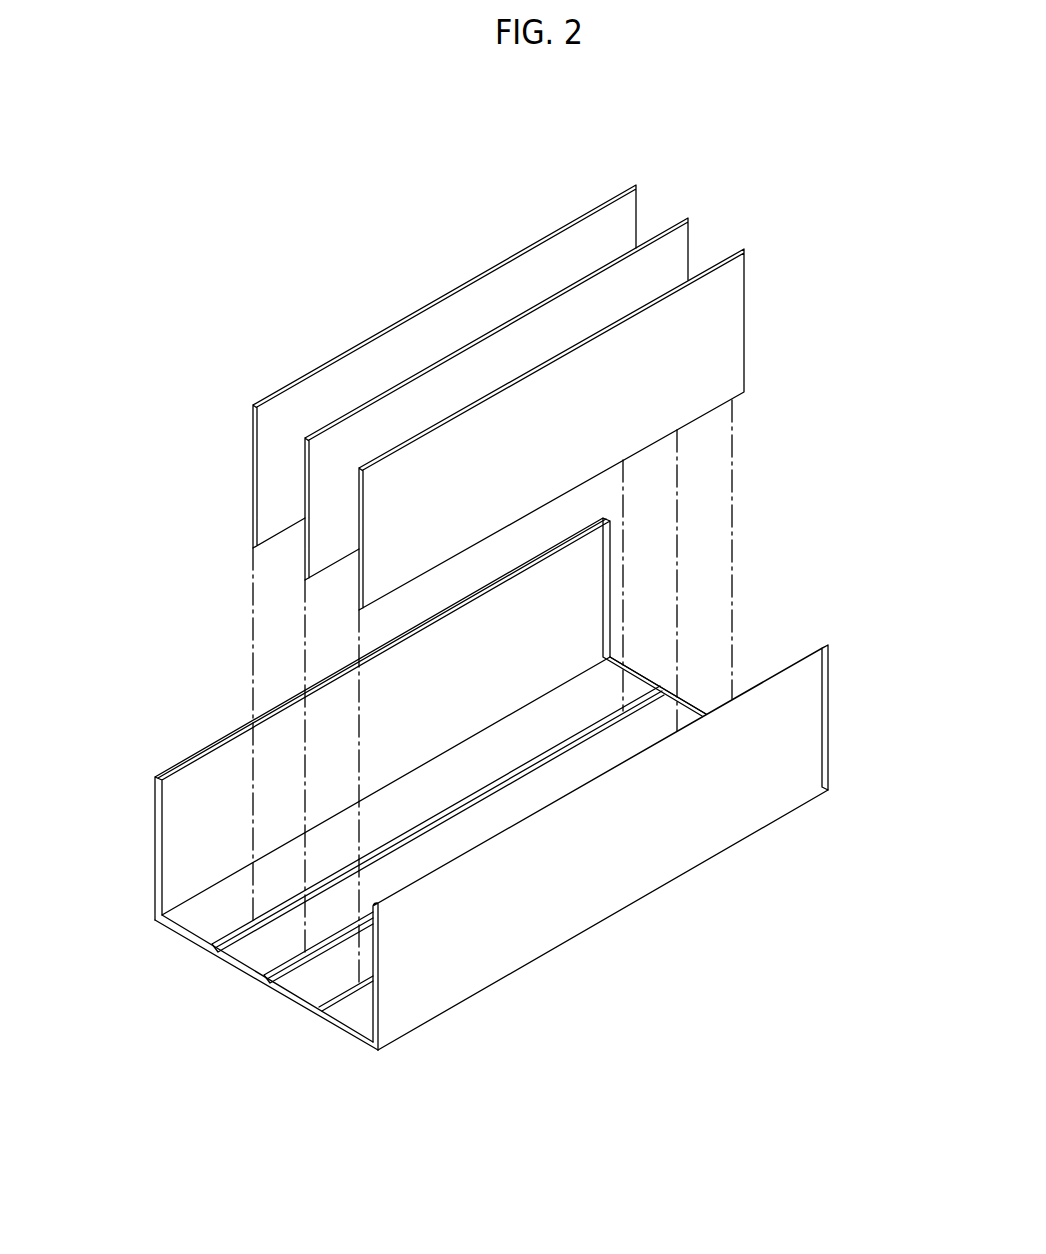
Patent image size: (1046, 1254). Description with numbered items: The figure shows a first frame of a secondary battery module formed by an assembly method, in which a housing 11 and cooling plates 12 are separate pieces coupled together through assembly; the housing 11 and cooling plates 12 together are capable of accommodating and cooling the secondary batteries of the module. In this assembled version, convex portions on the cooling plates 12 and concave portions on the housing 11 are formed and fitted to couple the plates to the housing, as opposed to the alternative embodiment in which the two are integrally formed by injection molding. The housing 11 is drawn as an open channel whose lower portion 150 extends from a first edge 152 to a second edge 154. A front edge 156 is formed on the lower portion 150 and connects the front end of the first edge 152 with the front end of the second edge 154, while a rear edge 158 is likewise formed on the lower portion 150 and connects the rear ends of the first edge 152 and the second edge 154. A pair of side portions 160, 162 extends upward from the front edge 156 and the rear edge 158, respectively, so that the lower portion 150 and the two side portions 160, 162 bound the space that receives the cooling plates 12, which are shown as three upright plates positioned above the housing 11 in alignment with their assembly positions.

The housing 11 is at (498, 807).
The cooling plates 12 is at (732, 342).
The lower portion 150 is at (208, 912).
The first edge 152 is at (246, 968).
The second edge 154 is at (682, 697).
The front edge 156 is at (220, 883).
The rear edge 158 is at (632, 905).
The side portion 160 is at (742, 803).
The side portion 162 is at (416, 678).